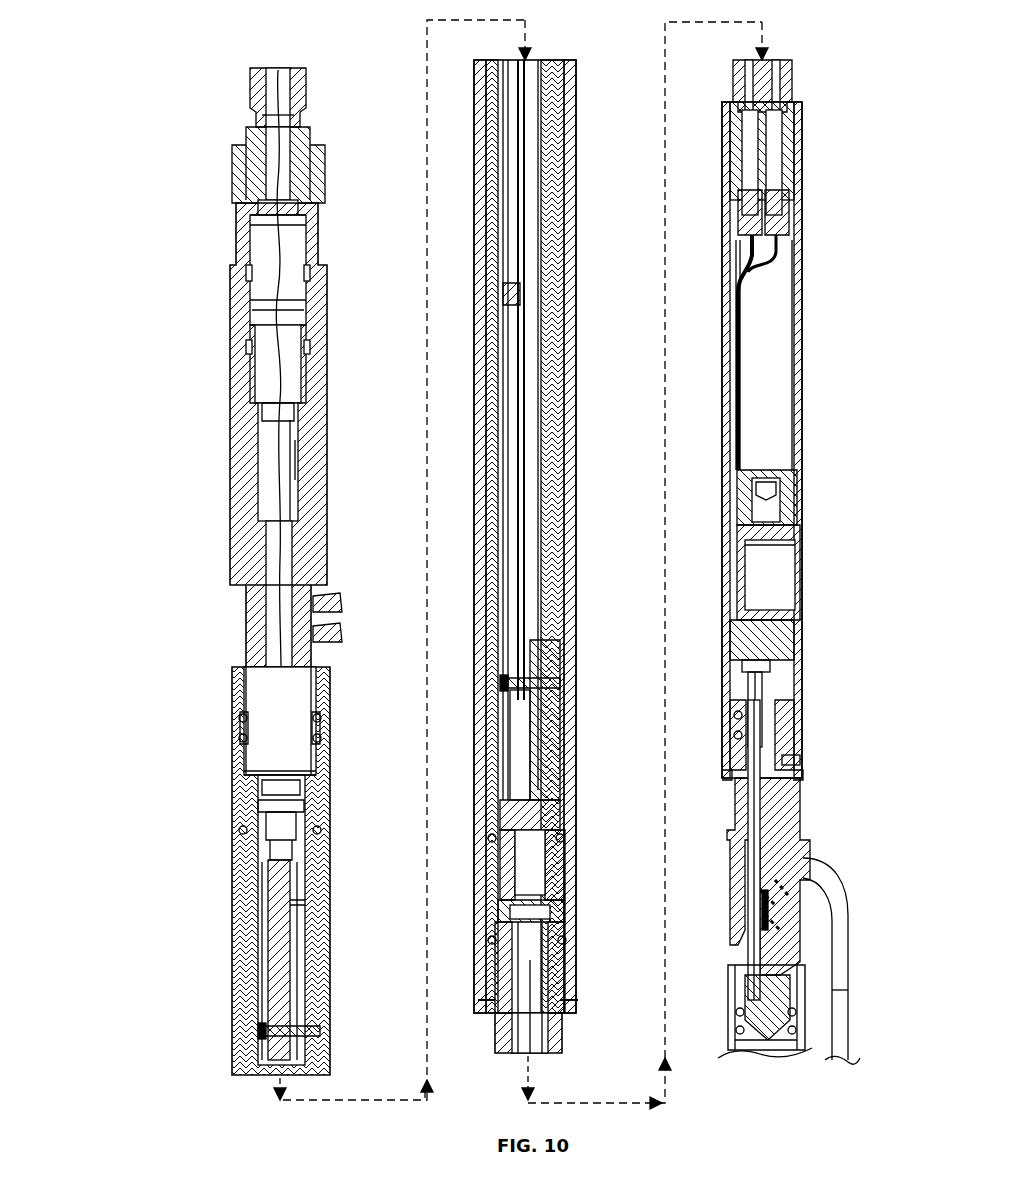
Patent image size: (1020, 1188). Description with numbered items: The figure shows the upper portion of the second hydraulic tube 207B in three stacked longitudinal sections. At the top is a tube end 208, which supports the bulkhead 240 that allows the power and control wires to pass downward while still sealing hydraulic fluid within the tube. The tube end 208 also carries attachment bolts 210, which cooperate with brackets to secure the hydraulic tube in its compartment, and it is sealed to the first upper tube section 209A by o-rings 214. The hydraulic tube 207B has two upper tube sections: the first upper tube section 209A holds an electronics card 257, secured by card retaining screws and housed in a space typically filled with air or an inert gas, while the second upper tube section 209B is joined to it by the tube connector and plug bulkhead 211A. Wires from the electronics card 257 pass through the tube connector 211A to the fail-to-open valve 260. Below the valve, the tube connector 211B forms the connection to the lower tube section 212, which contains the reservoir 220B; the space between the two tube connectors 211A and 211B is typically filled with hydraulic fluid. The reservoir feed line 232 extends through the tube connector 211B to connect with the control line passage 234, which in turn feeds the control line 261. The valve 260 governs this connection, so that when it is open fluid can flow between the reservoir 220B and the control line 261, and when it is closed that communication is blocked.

The hydraulic tube 207B is at (118, 612).
The tube end 208 is at (203, 458).
The bulkhead 240 is at (256, 385).
The attachment bolts 210 is at (341, 598).
The o-rings 214 is at (244, 726).
The upper tube section 209A is at (233, 908).
The electronics card 257 is at (536, 598).
The tube connector/plug bulkhead 211A is at (796, 80).
The upper tube section 209B is at (808, 450).
The fail-to-open valve 260 is at (818, 572).
The control line passage 234 is at (780, 745).
The tube connector 211B is at (800, 830).
The reservoir feed line 232 is at (748, 878).
The control line 261 is at (842, 927).
The lower tube section 212 is at (738, 1052).
The reservoir 220B is at (758, 1062).